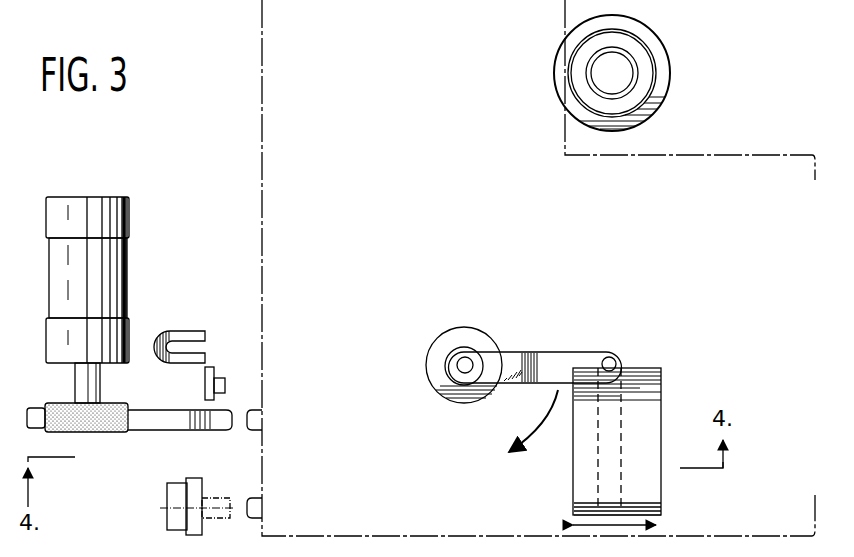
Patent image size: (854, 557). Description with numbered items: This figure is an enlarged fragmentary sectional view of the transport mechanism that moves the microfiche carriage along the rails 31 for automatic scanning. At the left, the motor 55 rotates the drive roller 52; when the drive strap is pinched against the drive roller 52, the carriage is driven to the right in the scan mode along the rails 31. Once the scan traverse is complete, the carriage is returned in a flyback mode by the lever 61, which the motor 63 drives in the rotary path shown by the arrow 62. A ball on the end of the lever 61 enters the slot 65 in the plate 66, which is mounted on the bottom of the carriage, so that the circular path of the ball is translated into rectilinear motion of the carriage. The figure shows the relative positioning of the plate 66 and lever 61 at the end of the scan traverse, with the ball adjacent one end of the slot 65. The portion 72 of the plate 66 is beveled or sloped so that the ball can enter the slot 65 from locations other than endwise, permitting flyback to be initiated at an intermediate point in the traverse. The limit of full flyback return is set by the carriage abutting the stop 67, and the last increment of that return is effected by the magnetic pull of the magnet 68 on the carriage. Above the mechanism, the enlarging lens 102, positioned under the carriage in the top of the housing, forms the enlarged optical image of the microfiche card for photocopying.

The rails 31 is at (210, 500).
The drive roller 52 is at (117, 405).
The motor 55 is at (100, 272).
The lever 61 is at (546, 358).
The arrow 62 is at (545, 426).
The motor 63 is at (445, 388).
The slot 65 is at (600, 440).
The plate 66 is at (582, 487).
The stop 67 is at (221, 378).
The magnet 68 is at (175, 318).
The portion of plate 72 is at (647, 463).
The enlarging lens 102 is at (628, 58).